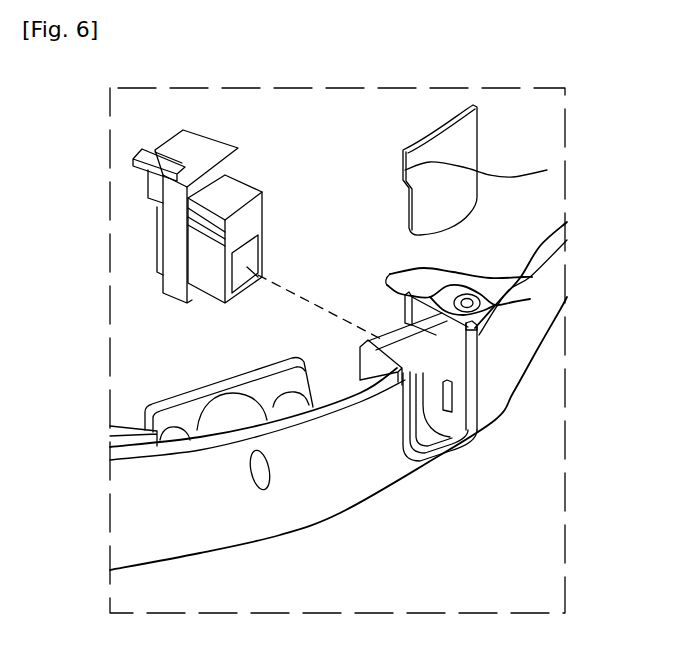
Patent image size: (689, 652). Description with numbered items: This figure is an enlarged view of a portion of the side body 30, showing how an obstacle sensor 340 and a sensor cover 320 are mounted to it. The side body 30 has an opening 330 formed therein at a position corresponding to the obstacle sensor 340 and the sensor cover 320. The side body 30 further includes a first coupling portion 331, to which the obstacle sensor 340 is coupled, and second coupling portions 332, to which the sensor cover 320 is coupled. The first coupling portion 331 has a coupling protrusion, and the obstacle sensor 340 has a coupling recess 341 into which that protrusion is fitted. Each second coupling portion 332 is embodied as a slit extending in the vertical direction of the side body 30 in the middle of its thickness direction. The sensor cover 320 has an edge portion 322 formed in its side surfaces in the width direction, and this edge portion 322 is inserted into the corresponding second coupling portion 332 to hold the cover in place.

The side body 30 is at (523, 320).
The sensor cover 320 is at (465, 132).
The edge portion 322 is at (477, 145).
The opening 330 is at (486, 387).
The first coupling portion 331 is at (530, 299).
The second coupling portion 332 is at (470, 343).
The obstacle sensor 340 is at (258, 219).
The coupling recess 341 is at (222, 137).